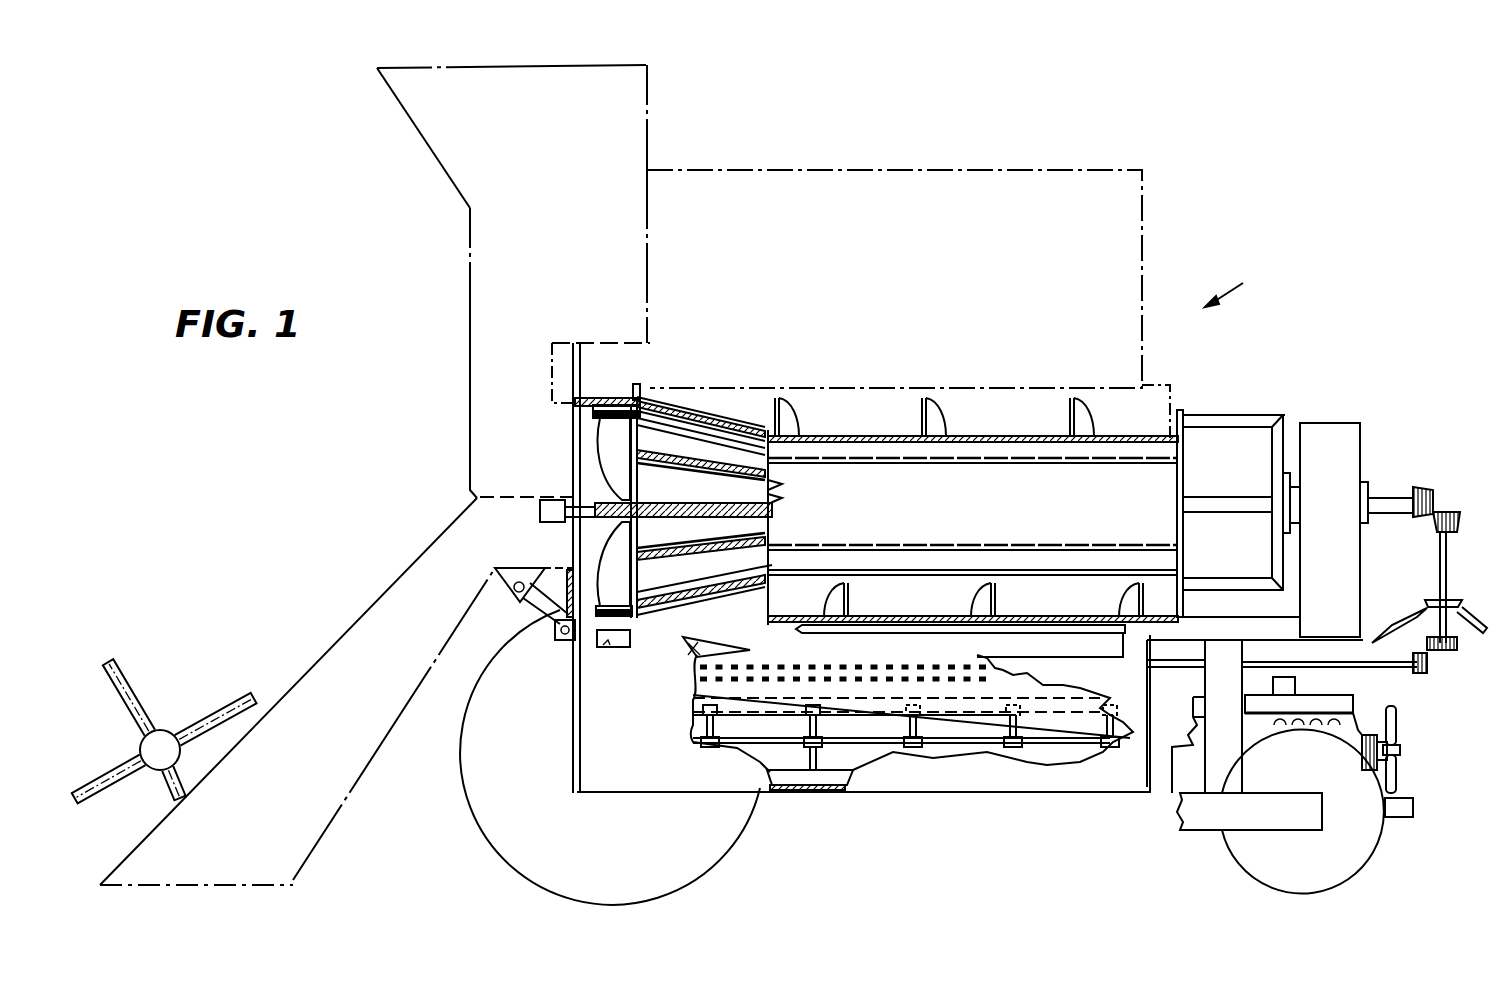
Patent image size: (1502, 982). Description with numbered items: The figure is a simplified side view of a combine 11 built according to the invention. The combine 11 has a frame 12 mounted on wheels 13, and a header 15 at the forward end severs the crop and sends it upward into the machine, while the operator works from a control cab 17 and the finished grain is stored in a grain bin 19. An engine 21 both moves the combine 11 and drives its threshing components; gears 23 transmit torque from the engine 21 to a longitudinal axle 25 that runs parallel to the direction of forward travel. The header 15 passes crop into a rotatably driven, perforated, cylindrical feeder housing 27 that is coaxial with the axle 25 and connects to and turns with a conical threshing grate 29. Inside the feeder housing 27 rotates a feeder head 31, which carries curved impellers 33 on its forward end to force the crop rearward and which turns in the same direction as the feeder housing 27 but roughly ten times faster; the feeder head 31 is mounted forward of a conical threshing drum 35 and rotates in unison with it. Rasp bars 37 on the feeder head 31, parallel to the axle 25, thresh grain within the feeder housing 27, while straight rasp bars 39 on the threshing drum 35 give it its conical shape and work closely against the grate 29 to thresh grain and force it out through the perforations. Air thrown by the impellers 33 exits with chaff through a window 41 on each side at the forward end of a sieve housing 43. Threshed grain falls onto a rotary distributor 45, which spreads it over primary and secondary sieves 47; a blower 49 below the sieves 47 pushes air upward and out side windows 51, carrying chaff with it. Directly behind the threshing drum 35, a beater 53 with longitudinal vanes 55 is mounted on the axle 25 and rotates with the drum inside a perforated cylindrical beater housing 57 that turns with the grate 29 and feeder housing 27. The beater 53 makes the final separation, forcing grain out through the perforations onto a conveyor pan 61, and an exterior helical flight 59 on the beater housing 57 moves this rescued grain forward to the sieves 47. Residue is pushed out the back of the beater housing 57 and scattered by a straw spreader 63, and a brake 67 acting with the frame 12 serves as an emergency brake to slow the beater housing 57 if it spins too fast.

The combine 11 is at (1288, 288).
The frame 12 is at (1218, 763).
The wheels 13 is at (470, 818).
The header 15 is at (333, 648).
The control cab 17 is at (468, 352).
The grain bin 19 is at (1143, 258).
The engine 21 is at (1340, 697).
The gears 23 is at (1440, 662).
The longitudinal axle 25 is at (1398, 500).
The feeder housing 27 is at (615, 398).
The conical threshing grate 29 is at (680, 392).
The feeder head 31 is at (607, 478).
The curved impellers 33 is at (605, 440).
The conical threshing drum 35 is at (705, 445).
The rasp bars 37 is at (597, 406).
The rasp bars 39 is at (778, 494).
The window 41 is at (597, 645).
The sieve housing 43 is at (580, 745).
The rotary distributor 45 is at (690, 657).
The primary and secondary sieves 47 is at (693, 690).
The blower 49 is at (800, 777).
The windows 51 is at (1080, 650).
The beater 53 is at (1128, 450).
The longitudinal vanes 55 is at (1160, 480).
The cylindrical beater housing 57 is at (1100, 428).
The exterior helical flight 59 is at (1160, 598).
The conveyor pan 61 is at (1022, 612).
The straw spreader 63 is at (1265, 417).
The brake 67 is at (1352, 445).